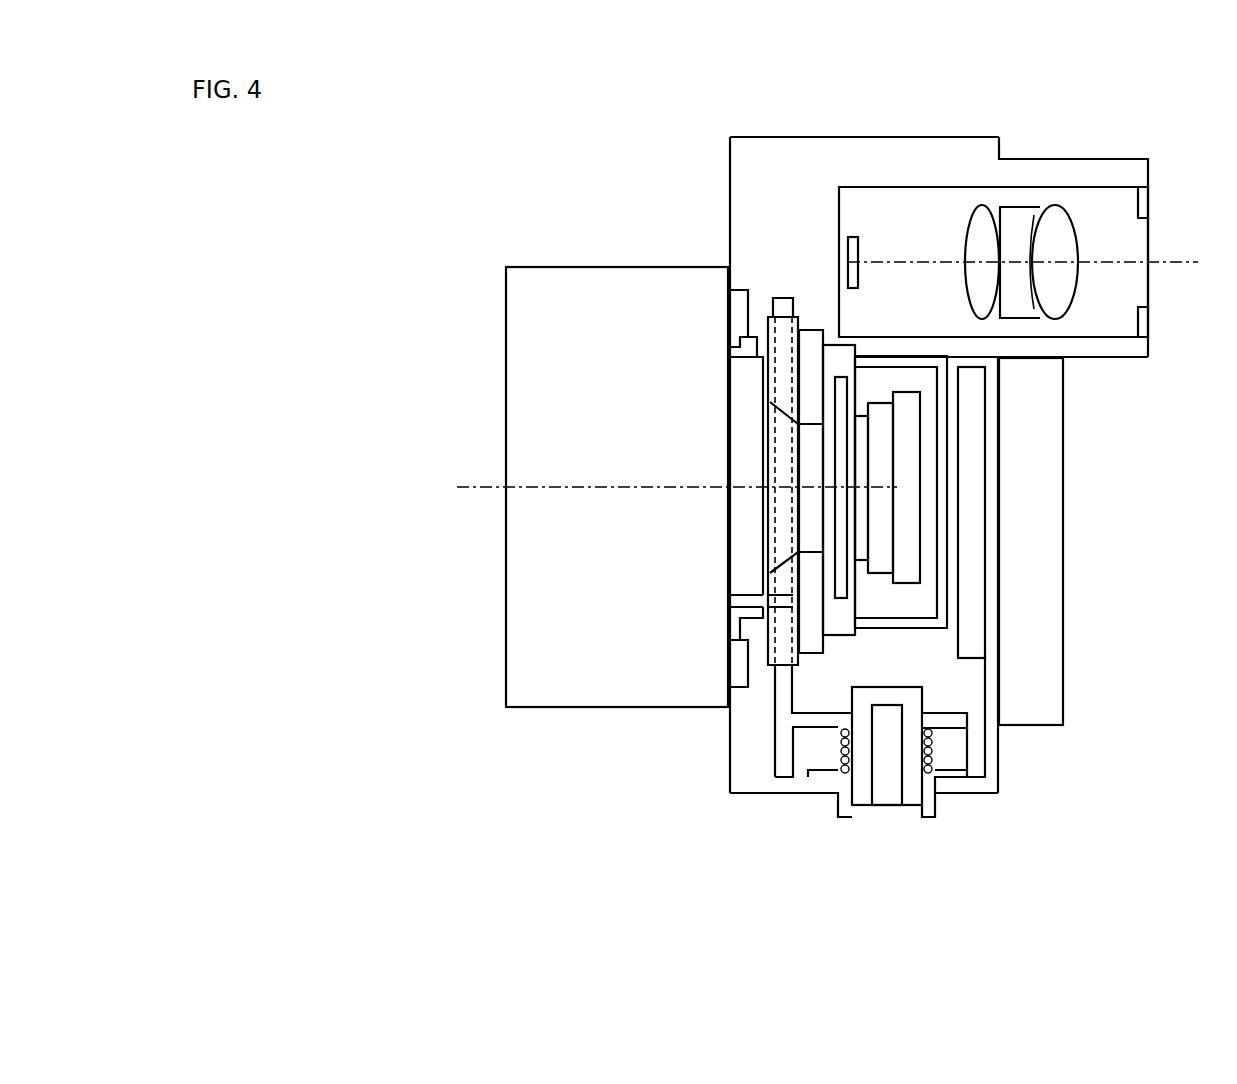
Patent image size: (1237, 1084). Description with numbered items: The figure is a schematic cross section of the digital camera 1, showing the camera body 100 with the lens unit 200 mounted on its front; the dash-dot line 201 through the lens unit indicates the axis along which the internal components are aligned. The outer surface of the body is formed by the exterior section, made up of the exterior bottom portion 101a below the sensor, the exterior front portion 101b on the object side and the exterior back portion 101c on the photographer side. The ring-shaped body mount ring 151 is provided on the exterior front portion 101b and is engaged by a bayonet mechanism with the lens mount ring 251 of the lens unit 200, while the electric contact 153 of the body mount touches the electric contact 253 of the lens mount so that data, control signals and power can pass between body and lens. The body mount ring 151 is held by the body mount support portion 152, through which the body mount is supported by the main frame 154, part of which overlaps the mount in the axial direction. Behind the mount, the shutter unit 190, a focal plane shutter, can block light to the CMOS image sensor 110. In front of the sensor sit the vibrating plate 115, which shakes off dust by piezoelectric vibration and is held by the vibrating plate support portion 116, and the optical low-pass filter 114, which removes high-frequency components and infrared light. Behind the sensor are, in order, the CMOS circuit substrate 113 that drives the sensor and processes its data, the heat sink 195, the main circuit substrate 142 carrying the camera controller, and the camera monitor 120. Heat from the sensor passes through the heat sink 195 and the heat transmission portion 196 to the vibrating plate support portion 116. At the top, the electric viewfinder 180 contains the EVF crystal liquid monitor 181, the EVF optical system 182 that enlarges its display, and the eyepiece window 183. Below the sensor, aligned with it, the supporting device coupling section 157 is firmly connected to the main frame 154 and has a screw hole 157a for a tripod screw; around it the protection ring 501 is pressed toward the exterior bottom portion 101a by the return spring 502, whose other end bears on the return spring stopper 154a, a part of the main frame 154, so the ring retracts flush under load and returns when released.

The digital camera 1 is at (420, 208).
The camera body 100 is at (945, 119).
The lens unit 200 is at (503, 357).
The optical axis 201 is at (480, 485).
The electric viewfinder 180 is at (1130, 247).
The EVF crystal liquid monitor 181 is at (860, 246).
The EVF optical system 182 is at (1060, 228).
The eyepiece window 183 is at (1148, 195).
The heat transmission portion 196 is at (920, 359).
The heat sink 195 is at (942, 385).
The camera monitor 120 is at (1038, 423).
The main circuit substrate 142 is at (968, 473).
The CMOS circuit substrate 113 is at (908, 500).
The CMOS image sensor 110 is at (881, 527).
The optical low-pass filter 114 is at (862, 538).
The vibrating plate 115 is at (835, 565).
The vibrating plate support portion 116 is at (833, 606).
The shutter unit 190 is at (812, 588).
The main frame 154 is at (782, 305).
The return spring stopper 154a is at (947, 723).
The body mount support portion 152 is at (775, 628).
The electric contact 153 is at (740, 618).
The electric contact 253 is at (738, 602).
The body mount ring 151 is at (740, 305).
The lens mount ring 251 is at (732, 347).
The exterior bottom portion 101a is at (798, 793).
The exterior front portion 101b is at (727, 713).
The exterior back portion 101c is at (1007, 770).
The protection ring 501 is at (930, 805).
The return spring 502 is at (932, 743).
The supporting device coupling section 157 is at (912, 793).
The screw hole 157a is at (882, 793).